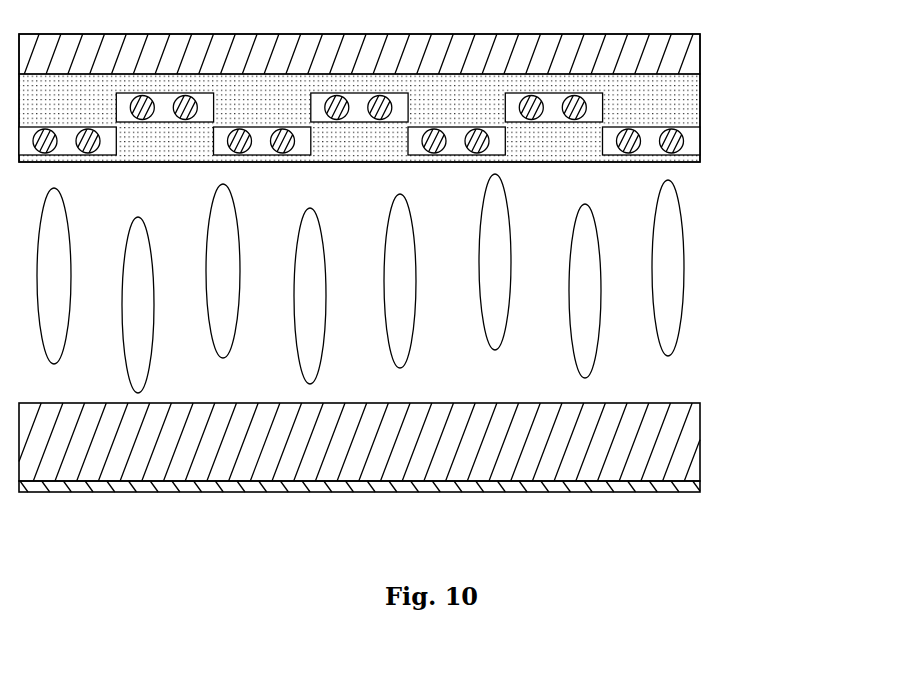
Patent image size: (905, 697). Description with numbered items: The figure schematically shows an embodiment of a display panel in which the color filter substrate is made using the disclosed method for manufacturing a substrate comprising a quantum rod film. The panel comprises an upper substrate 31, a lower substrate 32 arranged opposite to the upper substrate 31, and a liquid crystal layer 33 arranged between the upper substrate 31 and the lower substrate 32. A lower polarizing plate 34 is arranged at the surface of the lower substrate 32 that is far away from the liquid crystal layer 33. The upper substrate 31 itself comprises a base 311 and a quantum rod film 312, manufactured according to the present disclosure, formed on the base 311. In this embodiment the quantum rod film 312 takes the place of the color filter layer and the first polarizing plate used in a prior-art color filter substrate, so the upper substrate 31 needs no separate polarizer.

The upper substrate 31 is at (780, 53).
The base 311 is at (705, 50).
The quantum rod film 312 is at (705, 106).
The lower substrate 32 is at (685, 440).
The liquid crystal layer 33 is at (700, 273).
The lower polarizing plate 34 is at (680, 490).